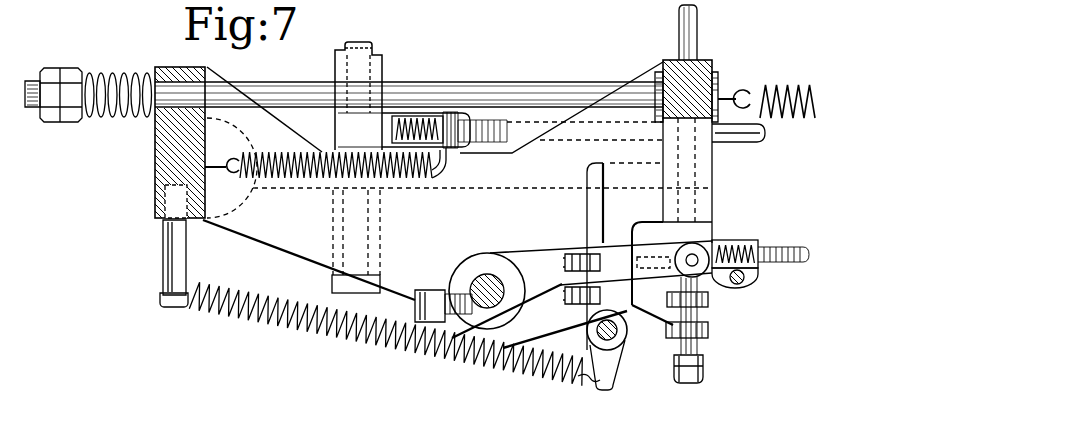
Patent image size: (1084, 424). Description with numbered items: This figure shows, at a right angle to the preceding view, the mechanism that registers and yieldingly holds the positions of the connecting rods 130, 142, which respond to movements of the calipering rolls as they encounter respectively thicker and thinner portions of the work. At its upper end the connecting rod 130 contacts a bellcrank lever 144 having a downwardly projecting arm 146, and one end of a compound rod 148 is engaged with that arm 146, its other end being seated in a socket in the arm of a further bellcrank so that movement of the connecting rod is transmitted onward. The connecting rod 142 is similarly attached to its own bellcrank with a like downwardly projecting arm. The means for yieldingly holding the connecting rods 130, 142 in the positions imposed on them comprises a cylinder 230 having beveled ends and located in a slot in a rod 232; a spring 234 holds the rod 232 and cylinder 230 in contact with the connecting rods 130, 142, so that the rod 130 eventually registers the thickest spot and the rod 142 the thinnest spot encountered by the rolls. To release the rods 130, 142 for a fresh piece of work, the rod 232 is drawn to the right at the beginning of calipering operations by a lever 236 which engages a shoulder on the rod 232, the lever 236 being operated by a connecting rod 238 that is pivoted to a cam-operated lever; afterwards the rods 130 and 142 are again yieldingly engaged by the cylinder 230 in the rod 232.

The connecting rod 130 is at (682, 25).
The connecting rod 142 is at (701, 378).
The bellcrank lever 144 is at (648, 338).
The downwardly projecting arm 146 is at (593, 202).
The compound rod 148 is at (650, 217).
The cylinder 230 is at (722, 82).
The rod 232 is at (552, 86).
The spring 234 is at (127, 73).
The lever 236 is at (380, 61).
The connecting rod 238 is at (490, 118).